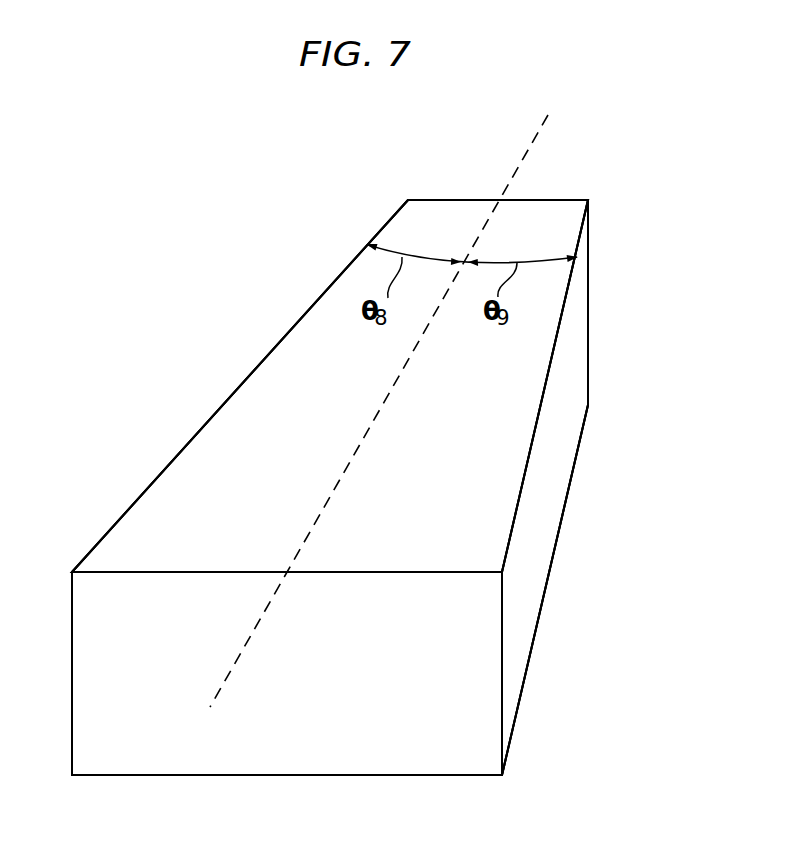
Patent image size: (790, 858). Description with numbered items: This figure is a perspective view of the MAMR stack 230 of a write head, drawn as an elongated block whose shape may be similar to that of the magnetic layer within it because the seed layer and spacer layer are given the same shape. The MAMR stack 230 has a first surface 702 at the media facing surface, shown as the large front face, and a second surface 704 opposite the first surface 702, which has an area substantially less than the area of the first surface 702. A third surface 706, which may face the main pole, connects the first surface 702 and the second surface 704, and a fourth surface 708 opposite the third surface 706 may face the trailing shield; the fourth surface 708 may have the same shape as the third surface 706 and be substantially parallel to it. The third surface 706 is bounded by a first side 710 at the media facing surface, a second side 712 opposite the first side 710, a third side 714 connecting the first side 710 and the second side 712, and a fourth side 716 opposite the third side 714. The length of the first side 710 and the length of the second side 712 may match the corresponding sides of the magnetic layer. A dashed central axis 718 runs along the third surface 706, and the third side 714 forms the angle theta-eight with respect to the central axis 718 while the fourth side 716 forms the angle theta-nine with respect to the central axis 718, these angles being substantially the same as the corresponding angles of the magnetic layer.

The MAMR stack 230 is at (190, 196).
The first surface 702 is at (355, 740).
The second surface 704 is at (589, 302).
The third surface 706 is at (452, 391).
The fourth surface 708 is at (535, 635).
The first side 710 is at (403, 573).
The second side 712 is at (445, 200).
The third side 714 is at (290, 330).
The fourth side 716 is at (535, 445).
The central axis 718 is at (534, 140).